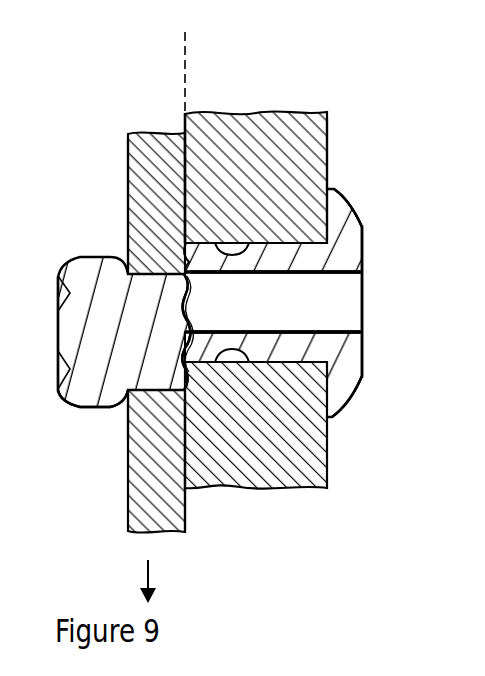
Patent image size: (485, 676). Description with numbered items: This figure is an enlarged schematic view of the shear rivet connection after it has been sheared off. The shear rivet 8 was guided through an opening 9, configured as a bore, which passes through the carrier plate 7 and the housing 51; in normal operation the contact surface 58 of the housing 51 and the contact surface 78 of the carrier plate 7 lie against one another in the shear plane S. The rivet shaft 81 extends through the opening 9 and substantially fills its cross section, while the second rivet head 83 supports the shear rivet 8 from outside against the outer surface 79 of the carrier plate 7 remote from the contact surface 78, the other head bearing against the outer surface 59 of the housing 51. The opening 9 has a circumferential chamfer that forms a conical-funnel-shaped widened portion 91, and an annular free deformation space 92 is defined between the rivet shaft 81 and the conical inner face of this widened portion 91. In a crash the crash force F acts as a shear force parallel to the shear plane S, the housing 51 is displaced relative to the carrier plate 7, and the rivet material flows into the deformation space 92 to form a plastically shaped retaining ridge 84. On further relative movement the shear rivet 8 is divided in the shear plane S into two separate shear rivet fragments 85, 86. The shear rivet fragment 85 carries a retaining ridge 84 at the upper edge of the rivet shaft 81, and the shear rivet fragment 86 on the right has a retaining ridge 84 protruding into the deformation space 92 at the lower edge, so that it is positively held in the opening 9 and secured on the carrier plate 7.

The carrier plate 7 is at (329, 113).
The housing 51 is at (155, 163).
The contact surface 58 is at (186, 516).
The outer surface 59 is at (127, 150).
The contact surface 78 is at (185, 128).
The outer surface 79 is at (329, 137).
The shear rivet 8 is at (90, 268).
The rivet shaft 81 is at (67, 313).
The second rivet head 83 is at (357, 391).
The retaining ridge 84 is at (257, 331).
The shear rivet fragment 85 is at (82, 403).
The shear rivet fragment 86 is at (348, 238).
The opening 9 is at (236, 240).
The widened portion 91 is at (183, 268).
The free deformation space 92 is at (127, 427).
The shear plane S is at (183, 38).
The crash force F is at (152, 563).